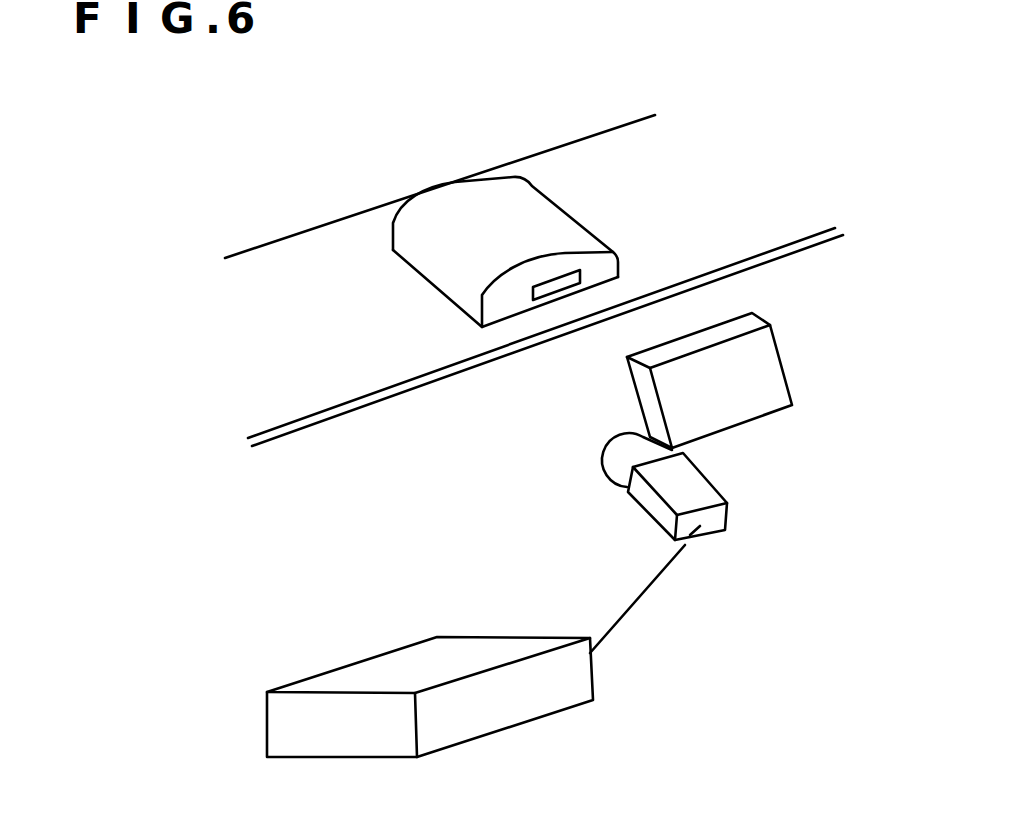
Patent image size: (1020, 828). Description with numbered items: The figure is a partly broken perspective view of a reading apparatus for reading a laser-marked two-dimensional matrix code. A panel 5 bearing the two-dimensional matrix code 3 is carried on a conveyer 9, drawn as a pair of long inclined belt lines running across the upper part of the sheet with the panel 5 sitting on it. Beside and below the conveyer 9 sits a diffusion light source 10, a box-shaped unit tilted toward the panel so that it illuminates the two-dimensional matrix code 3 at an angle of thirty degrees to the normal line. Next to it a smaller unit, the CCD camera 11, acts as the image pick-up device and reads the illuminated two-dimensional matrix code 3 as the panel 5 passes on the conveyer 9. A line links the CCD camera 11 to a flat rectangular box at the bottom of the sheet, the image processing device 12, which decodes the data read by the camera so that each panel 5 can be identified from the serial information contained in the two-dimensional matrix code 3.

The two-dimensional matrix code 3 is at (567, 282).
The panel 5 is at (473, 237).
The conveyer 9 is at (345, 258).
The diffusion light source 10 is at (733, 387).
The CCD camera 11 is at (683, 492).
The image processing device 12 is at (412, 675).